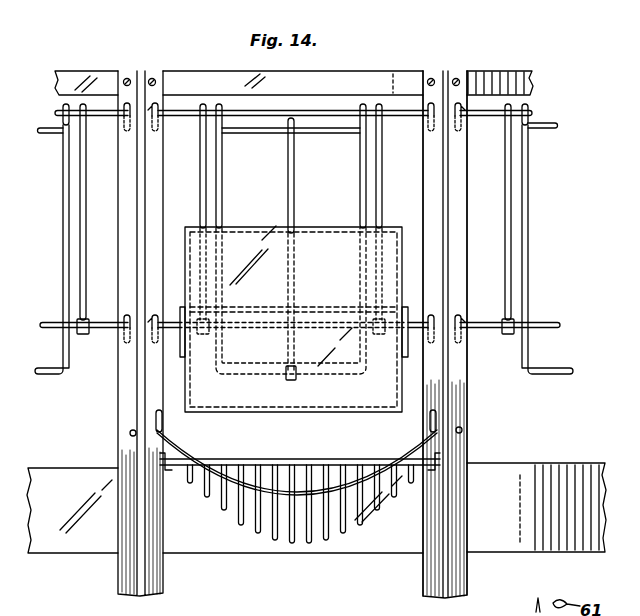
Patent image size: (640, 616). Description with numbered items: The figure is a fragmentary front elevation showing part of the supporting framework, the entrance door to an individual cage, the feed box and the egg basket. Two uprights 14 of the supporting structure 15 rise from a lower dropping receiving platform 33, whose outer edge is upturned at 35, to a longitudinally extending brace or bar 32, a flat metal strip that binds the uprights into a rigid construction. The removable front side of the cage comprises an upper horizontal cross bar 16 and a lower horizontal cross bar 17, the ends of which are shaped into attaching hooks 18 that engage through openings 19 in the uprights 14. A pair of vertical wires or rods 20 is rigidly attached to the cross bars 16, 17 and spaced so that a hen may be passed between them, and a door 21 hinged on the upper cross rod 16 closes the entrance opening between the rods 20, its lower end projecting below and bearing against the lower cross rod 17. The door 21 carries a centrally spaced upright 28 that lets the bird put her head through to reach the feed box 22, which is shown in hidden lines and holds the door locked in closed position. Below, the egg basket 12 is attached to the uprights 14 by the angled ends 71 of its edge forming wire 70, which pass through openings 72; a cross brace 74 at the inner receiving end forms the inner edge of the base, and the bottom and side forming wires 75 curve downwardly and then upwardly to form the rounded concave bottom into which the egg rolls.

The egg basket 12 is at (300, 522).
The upright 14 is at (165, 590).
The supporting structure 15 is at (424, 588).
The upper horizontal cross bar 16 is at (405, 118).
The lower horizontal cross bar 17 is at (108, 332).
The attaching hook 18 is at (149, 128).
The opening 19 is at (160, 104).
The vertical wire or rod 20 is at (200, 175).
The door 21 is at (226, 185).
The feed box 22 is at (268, 412).
The centrally spaced upright 28 is at (295, 168).
The longitudinally extending brace or bar 32 is at (101, 73).
The dropping receiving platform 33 is at (375, 556).
The upturned outer edge 35 is at (497, 545).
The edge forming wire 70 is at (242, 512).
The angled end 71 is at (164, 427).
The opening 72 is at (130, 433).
The cross brace 74 is at (329, 462).
The bottom and side forming wire 75 is at (348, 540).